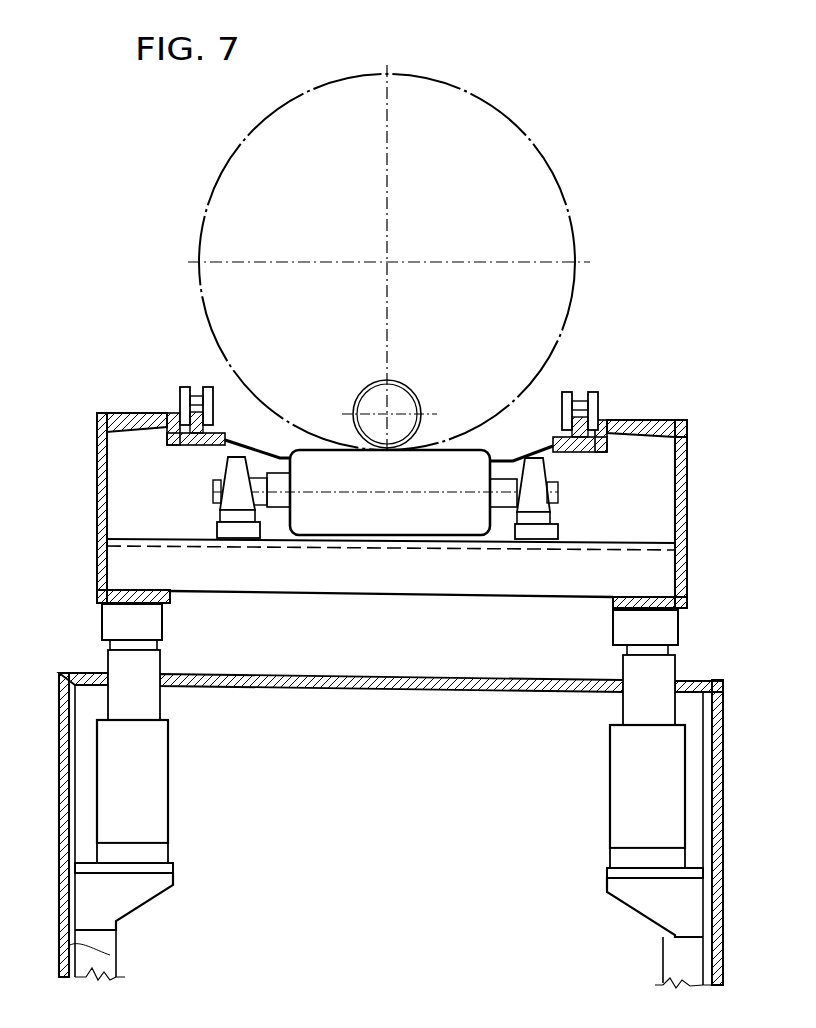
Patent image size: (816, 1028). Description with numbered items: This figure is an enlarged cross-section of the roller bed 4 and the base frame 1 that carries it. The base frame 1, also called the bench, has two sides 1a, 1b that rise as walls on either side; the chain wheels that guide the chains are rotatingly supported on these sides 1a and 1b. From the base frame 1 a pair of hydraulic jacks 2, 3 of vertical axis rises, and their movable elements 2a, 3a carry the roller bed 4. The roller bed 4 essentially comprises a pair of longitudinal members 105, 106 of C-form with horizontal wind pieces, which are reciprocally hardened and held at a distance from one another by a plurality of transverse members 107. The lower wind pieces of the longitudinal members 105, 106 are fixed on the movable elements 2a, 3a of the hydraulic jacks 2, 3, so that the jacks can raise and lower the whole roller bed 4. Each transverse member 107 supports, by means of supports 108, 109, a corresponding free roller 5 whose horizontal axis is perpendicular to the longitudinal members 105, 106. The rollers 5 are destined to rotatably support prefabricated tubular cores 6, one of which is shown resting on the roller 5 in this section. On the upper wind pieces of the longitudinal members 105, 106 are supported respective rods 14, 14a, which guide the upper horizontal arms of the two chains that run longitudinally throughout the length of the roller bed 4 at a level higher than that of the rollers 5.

The base frame 1 is at (345, 690).
The side of base frame 1a is at (110, 956).
The side of base frame 1b is at (712, 955).
The hydraulic jack 2 is at (150, 803).
The movable element of hydraulic jack 2a is at (146, 664).
The hydraulic jack 3 is at (627, 789).
The movable element of hydraulic jack 3a is at (636, 677).
The roller bed 4 is at (117, 405).
The roller 5 is at (377, 515).
The prefabricated tubular core 6 is at (368, 381).
The rod 14 is at (181, 400).
The rod 14a is at (593, 394).
The longitudinal member 105 is at (101, 497).
The longitudinal member 106 is at (688, 507).
The transverse member 107 is at (432, 572).
The support 108 is at (221, 511).
The support 109 is at (553, 518).